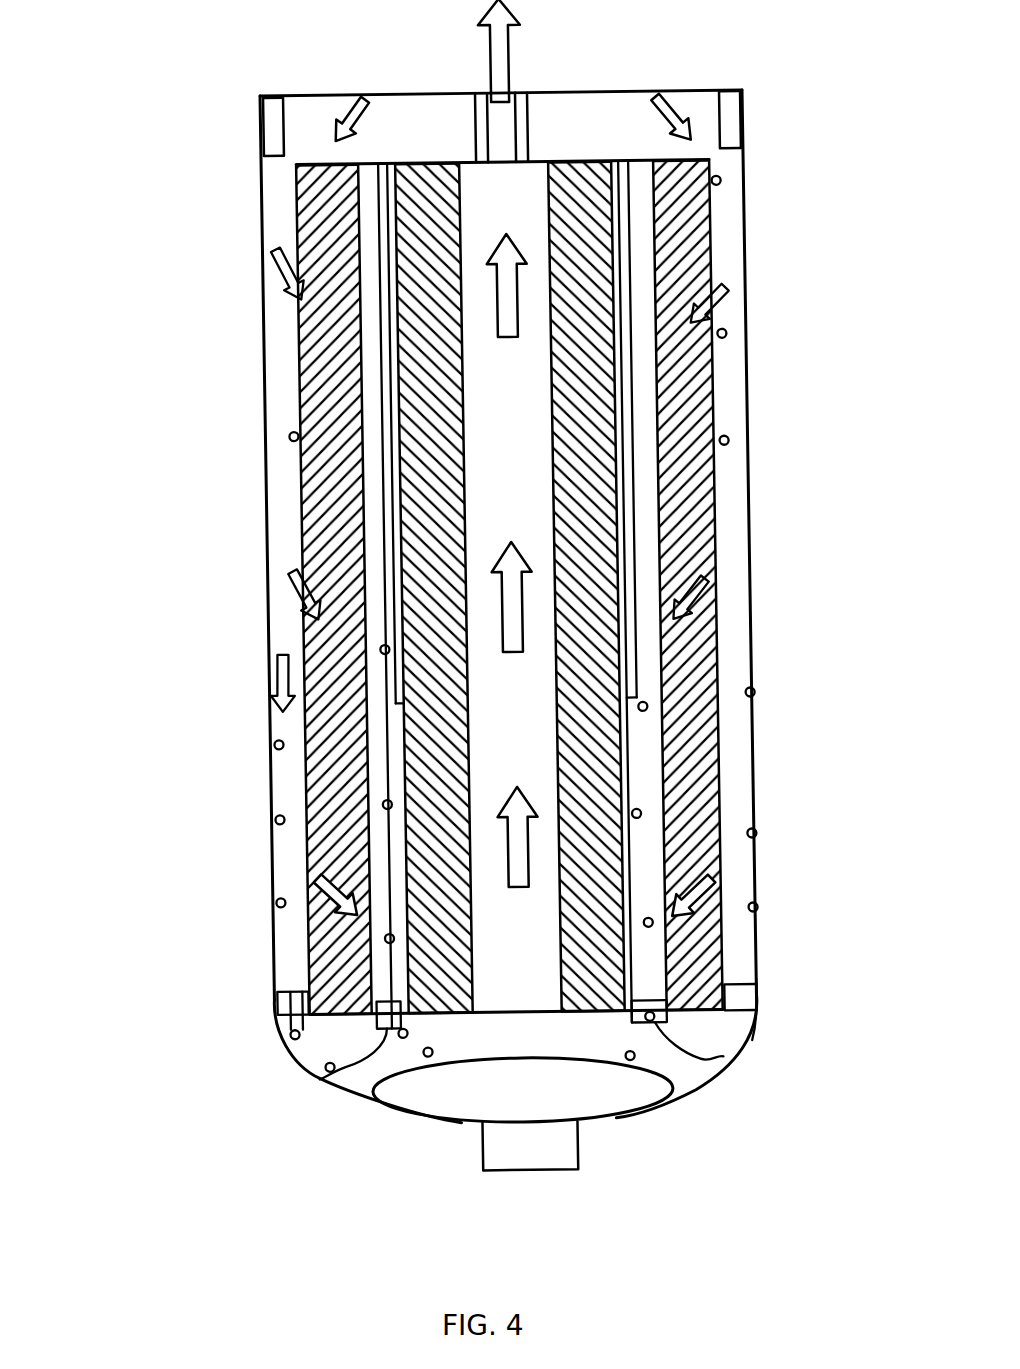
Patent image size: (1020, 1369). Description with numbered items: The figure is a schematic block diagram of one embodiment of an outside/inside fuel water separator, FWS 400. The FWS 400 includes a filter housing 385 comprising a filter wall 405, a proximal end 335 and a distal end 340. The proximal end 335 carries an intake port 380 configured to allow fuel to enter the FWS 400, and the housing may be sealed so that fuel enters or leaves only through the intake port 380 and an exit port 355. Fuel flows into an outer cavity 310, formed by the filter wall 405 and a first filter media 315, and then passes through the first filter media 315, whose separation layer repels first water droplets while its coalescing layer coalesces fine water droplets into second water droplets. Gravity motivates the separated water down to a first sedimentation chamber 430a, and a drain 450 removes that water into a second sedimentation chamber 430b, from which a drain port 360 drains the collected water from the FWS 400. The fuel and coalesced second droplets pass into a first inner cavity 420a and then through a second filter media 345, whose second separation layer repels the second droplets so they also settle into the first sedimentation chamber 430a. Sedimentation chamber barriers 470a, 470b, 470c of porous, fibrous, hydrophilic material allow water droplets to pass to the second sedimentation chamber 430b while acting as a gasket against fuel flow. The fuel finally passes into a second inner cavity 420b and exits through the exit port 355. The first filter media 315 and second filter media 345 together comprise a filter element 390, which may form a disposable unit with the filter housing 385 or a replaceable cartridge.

The outside/inside fuel water separator 400 is at (124, 62).
The proximal end 335 is at (286, 96).
The intake port 380 is at (394, 96).
The exit port 355 is at (530, 106).
The filter wall 405 is at (262, 222).
The filter element 390 is at (744, 236).
The outer cavity 310 is at (268, 548).
The first filter media 315 is at (330, 405).
The second filter media 345 is at (440, 800).
The first inner cavity 420a is at (370, 525).
The second inner cavity 420b is at (530, 505).
The filter housing 385 is at (262, 652).
The first sedimentation chamber 430a is at (300, 978).
The drain 450 is at (290, 1010).
The distal end 340 is at (303, 1068).
The second sedimentation chamber 430b is at (418, 1090).
The drain port 360 is at (578, 1172).
The sedimentation chamber barrier 470a is at (318, 1083).
The sedimentation chamber barrier 470b is at (728, 1060).
The sedimentation chamber barrier 470c is at (760, 1002).